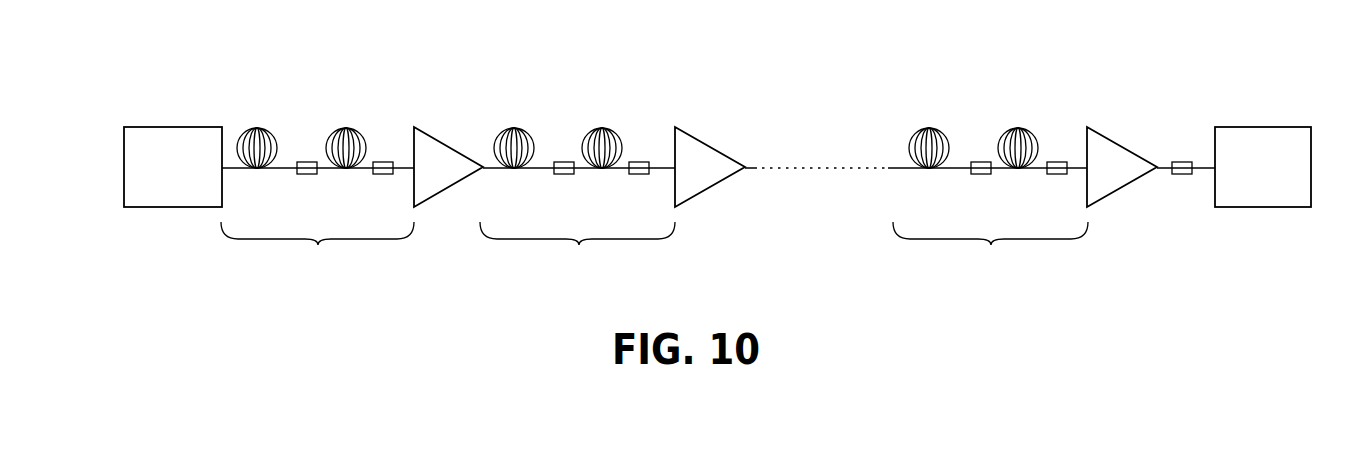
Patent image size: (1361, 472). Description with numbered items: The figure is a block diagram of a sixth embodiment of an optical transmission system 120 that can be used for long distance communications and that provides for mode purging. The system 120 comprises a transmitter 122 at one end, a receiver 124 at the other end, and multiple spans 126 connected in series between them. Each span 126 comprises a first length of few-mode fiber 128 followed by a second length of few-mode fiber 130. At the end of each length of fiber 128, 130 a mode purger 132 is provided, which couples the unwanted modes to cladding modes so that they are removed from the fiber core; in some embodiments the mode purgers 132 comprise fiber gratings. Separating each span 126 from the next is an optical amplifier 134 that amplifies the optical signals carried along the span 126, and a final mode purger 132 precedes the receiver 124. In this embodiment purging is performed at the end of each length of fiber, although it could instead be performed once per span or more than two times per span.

The optical transmission system 120 is at (1305, 51).
The transmitter 122 is at (158, 178).
The receiver 124 is at (1248, 178).
The span 126 is at (654, 248).
The first length of few-mode fiber 128 is at (257, 127).
The second length of few-mode fiber 130 is at (346, 127).
The mode purger 132 is at (305, 162).
The optical amplifier 134 is at (422, 178).